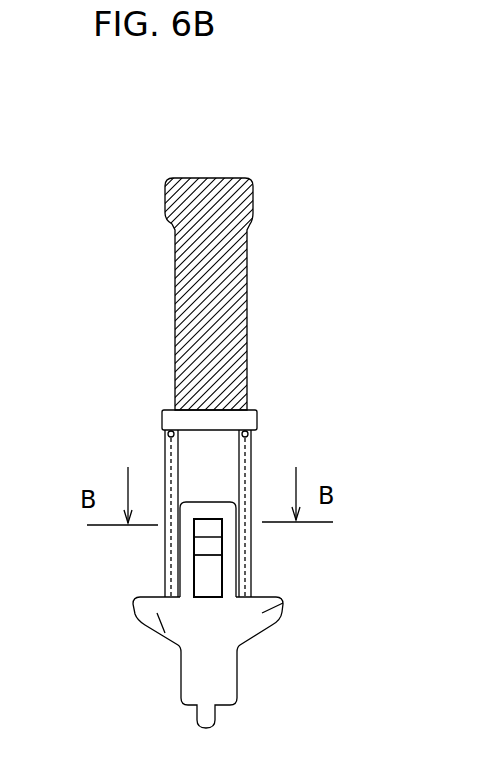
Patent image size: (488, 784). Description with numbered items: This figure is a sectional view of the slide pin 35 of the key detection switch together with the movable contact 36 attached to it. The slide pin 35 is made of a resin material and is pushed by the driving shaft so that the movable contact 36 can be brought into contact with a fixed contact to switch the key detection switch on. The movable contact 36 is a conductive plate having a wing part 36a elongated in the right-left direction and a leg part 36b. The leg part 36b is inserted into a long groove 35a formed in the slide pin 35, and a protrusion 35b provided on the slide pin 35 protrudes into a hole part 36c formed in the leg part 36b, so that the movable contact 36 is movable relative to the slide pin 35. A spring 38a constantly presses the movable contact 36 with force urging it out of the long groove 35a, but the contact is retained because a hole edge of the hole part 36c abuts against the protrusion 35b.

The slide pin 35 is at (175, 285).
The long groove 35a is at (163, 429).
The protrusion 35b is at (205, 527).
The movable contact 36 is at (208, 690).
The wing part 36a is at (163, 633).
The leg part 36b is at (203, 508).
The hole part 36c is at (208, 577).
The spring 38a is at (165, 470).